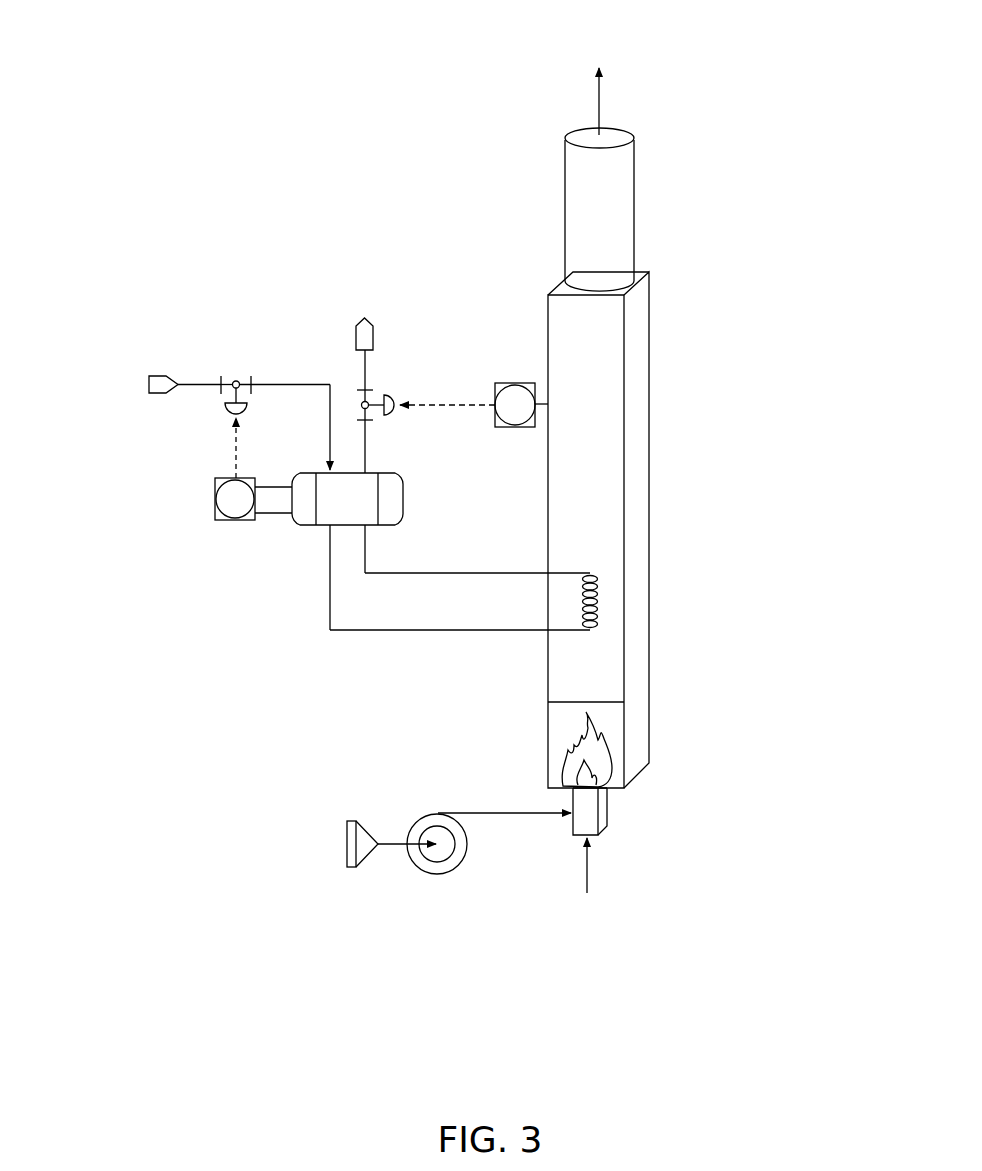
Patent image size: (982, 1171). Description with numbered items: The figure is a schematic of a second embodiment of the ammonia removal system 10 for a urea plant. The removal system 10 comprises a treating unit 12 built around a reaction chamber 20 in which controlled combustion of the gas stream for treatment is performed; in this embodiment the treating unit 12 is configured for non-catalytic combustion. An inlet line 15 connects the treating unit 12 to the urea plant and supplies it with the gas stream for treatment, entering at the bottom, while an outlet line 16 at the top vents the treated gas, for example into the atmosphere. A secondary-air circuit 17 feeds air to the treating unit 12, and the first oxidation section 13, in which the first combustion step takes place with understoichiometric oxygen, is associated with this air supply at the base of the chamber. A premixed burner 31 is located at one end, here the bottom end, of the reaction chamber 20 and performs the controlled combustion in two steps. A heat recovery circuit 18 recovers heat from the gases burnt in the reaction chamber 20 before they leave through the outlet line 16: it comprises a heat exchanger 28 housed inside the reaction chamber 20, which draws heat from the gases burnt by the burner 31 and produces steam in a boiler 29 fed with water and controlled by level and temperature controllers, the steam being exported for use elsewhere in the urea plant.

The removal system 10 is at (735, 146).
The treating unit 12 is at (511, 669).
The first oxidation section 13 is at (558, 838).
The inlet line 15 is at (590, 878).
The outlet line 16 is at (600, 100).
The secondary-air circuit 17 is at (484, 808).
The heat recovery circuit 18 is at (241, 310).
The reaction chamber 20 is at (642, 738).
The heat exchanger 28 is at (598, 601).
The boiler 29 is at (372, 522).
The premixed burner 31 is at (590, 813).